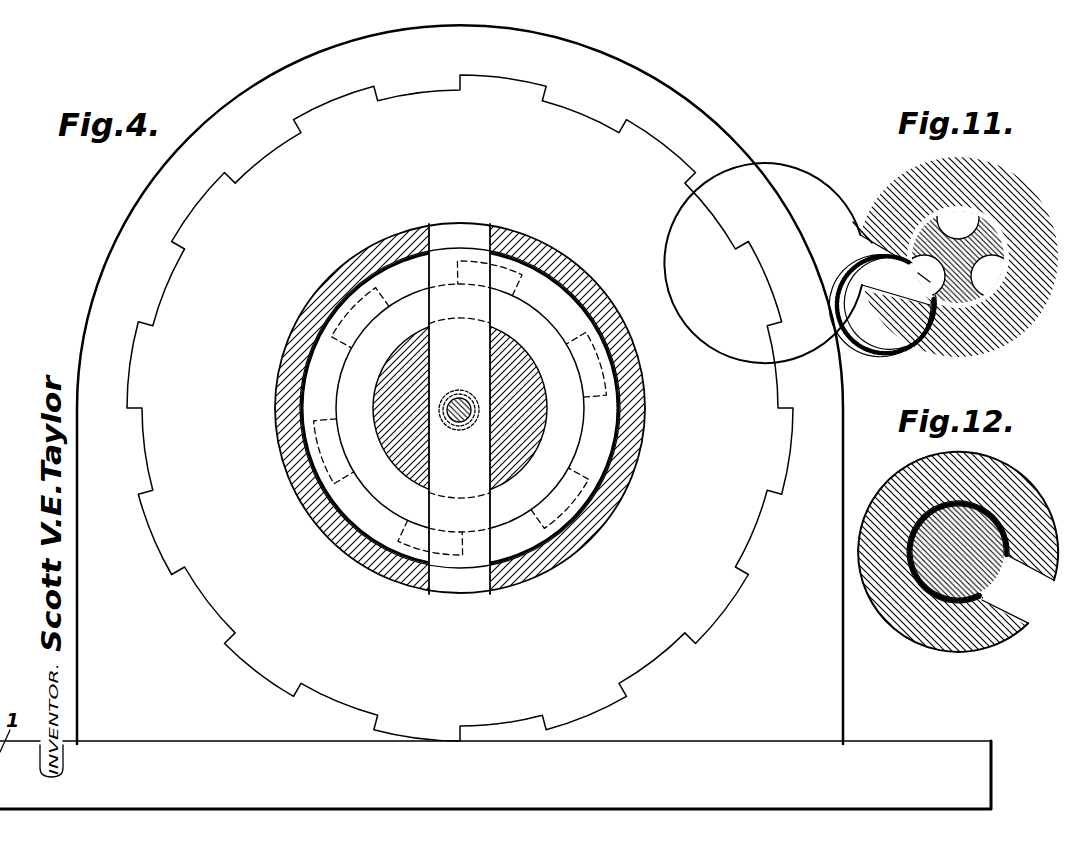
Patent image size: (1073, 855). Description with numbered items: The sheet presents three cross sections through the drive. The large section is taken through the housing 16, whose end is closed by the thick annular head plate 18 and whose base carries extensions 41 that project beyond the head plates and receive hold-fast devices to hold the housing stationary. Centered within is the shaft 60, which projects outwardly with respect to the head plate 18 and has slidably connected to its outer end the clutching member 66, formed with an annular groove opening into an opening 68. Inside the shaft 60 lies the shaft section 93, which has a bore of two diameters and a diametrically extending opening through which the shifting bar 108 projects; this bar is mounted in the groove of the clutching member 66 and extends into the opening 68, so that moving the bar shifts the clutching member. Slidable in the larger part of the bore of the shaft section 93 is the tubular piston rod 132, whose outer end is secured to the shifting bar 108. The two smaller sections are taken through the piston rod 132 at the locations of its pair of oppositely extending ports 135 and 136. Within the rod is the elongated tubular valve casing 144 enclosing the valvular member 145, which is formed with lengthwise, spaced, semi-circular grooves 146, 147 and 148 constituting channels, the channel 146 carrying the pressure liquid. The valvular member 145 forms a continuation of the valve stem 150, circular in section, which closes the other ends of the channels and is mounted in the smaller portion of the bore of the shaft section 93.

In FIG. 4, the housing 16 is at (652, 102).
In FIG. 4, the annular head plate 18 is at (305, 165).
In FIG. 4, the extensions 41 is at (887, 757).
In FIG. 4, the shaft 60 is at (563, 380).
In FIG. 4, the clutching member 66 is at (570, 277).
In FIG. 4, the opening 68 is at (434, 238).
In FIG. 4, the shaft section 93 is at (403, 387).
In FIG. 4, the shifting bar 108 is at (468, 308).
In FIG. 4, the tubular piston rod 132 is at (467, 417).
In FIG. 11, the tubular piston rod 132 is at (861, 265).
In FIG. 12, the tubular piston rod 132 is at (959, 557).
In FIG. 11, the port 135 is at (895, 300).
In FIG. 12, the port 136 is at (1025, 598).
In FIG. 11, the tubular valve casing 144 is at (1000, 232).
In FIG. 12, the tubular valve casing 144 is at (925, 510).
In FIG. 11, the valvular member 145 is at (988, 239).
In FIG. 12, the valvular member 145 is at (942, 572).
In FIG. 11, the channel 146 is at (957, 222).
In FIG. 11, the channel 147 is at (846, 225).
In FIG. 11, the channel 148 is at (998, 281).
In FIG. 4, the valve stem 150 is at (447, 413).